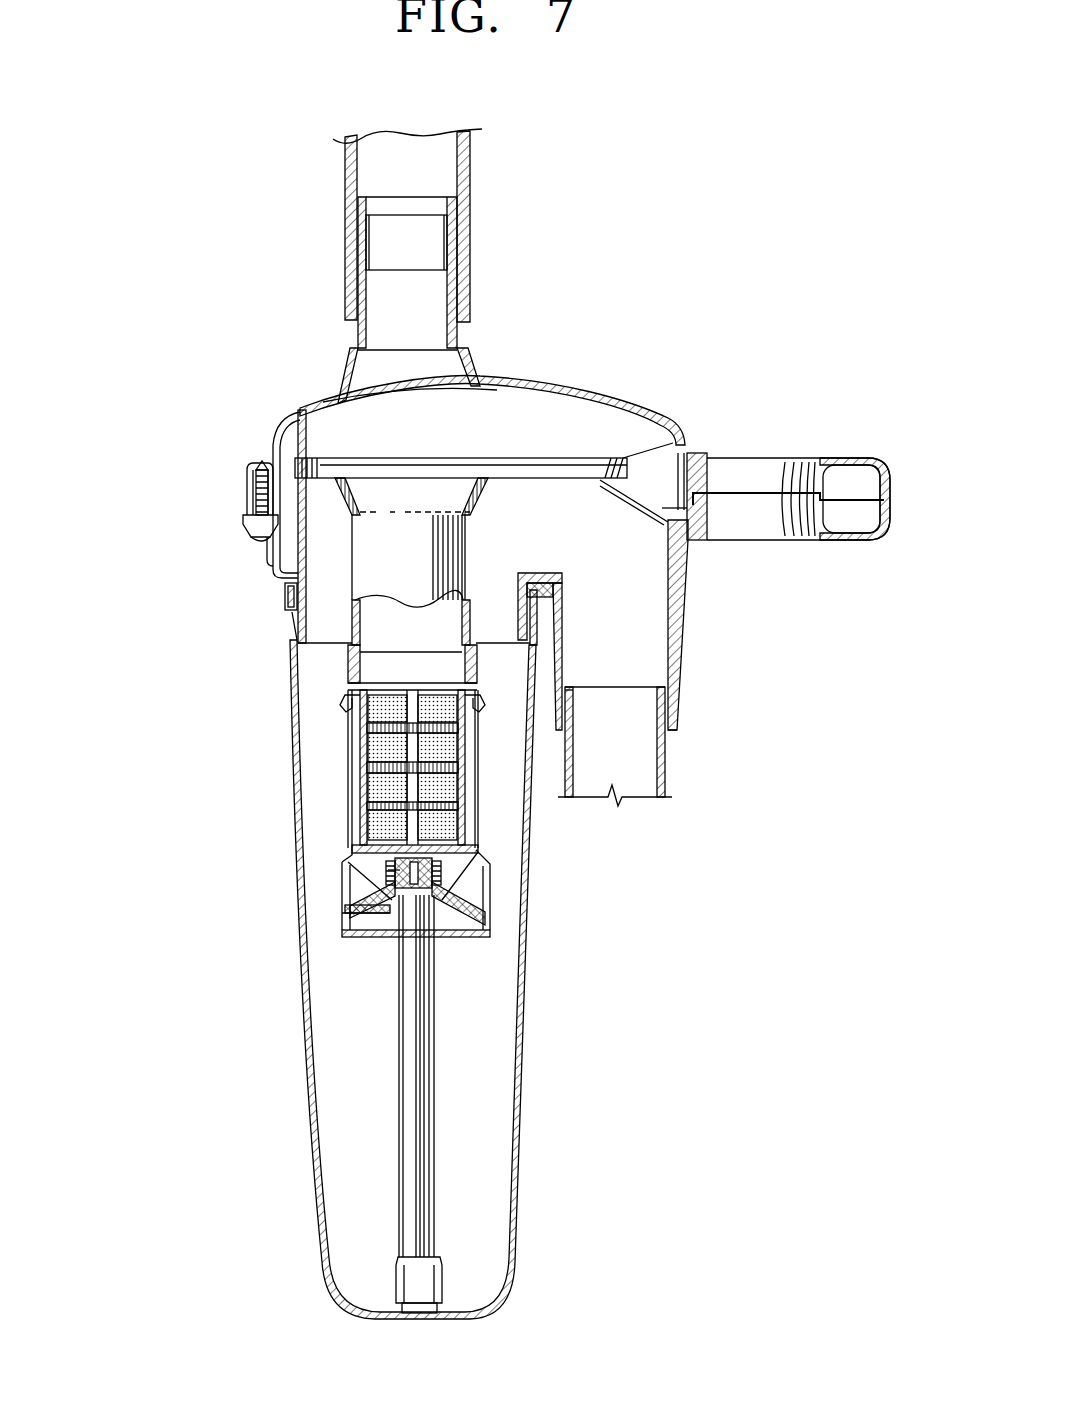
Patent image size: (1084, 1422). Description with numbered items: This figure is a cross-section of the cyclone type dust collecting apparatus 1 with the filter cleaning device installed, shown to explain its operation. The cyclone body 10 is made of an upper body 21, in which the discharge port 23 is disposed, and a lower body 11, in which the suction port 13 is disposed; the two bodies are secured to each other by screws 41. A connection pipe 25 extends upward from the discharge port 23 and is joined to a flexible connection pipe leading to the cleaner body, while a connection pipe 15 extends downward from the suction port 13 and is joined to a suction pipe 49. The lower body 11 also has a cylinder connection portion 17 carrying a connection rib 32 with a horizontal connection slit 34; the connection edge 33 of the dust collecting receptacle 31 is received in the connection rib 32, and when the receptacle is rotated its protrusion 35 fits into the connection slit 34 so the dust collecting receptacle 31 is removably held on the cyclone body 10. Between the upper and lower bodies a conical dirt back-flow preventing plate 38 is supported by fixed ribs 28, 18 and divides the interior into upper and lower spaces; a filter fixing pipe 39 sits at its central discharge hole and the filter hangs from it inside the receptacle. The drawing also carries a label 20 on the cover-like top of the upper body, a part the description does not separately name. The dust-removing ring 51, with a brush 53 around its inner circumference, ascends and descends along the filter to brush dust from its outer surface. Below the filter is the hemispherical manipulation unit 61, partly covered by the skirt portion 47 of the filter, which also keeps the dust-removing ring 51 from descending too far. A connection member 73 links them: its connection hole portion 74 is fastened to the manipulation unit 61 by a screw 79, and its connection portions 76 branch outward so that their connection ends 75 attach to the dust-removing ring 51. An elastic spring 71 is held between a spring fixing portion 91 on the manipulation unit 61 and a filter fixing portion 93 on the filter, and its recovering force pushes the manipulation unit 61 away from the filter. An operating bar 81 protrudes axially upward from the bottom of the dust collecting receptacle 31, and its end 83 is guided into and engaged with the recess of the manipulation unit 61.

The cyclone type dust collecting apparatus 1 is at (205, 330).
The cyclone body 10 is at (150, 415).
The lower body 11 is at (300, 560).
The suction port 13 is at (684, 676).
The connection pipe 15 is at (678, 712).
The cylinder connection portion 17 is at (293, 630).
The fixed rib 18 is at (648, 488).
The cover 20 is at (645, 413).
The upper body 21 is at (284, 415).
The discharge port 23 is at (355, 360).
The connection pipe 25 is at (358, 235).
The fixed rib 28 is at (300, 420).
The dust collecting receptacle 31 is at (297, 971).
The connection rib 32 is at (285, 588).
The connection edge 33 is at (287, 600).
The connection slit 34 is at (559, 606).
The protrusion 35 is at (562, 574).
The dirt back-flow preventing plate 38 is at (503, 462).
The filter fixing pipe 39 is at (450, 547).
The screw 41 is at (254, 490).
The skirt portion 47 is at (470, 150).
The suction pipe 49 is at (664, 778).
The dust-removing ring 51 is at (569, 700).
The brush 53 is at (534, 740).
The manipulation unit 61 is at (468, 903).
The elastic spring 71 is at (466, 880).
The connection member 73 is at (190, 700).
The connection hole portion 74 is at (345, 871).
The connection end 75 is at (348, 704).
The connection portion 76 is at (357, 764).
The screw 79 is at (345, 913).
The operating bar 81 is at (420, 1153).
The end 83 is at (452, 920).
The spring fixing portion 91 is at (400, 842).
The filter fixing portion 93 is at (446, 851).